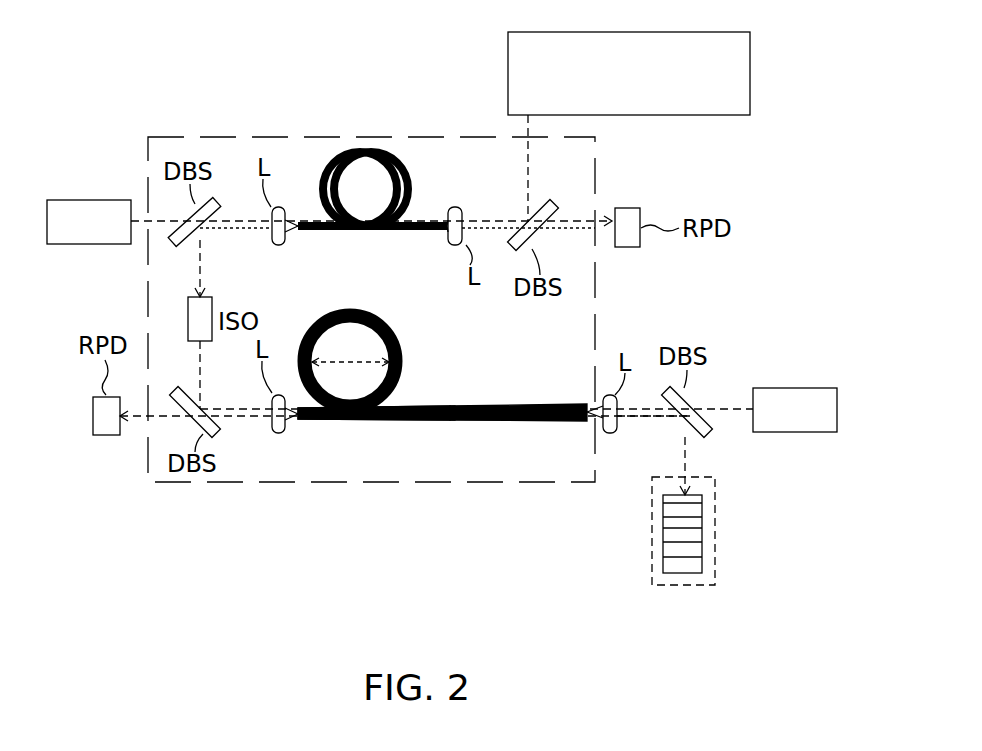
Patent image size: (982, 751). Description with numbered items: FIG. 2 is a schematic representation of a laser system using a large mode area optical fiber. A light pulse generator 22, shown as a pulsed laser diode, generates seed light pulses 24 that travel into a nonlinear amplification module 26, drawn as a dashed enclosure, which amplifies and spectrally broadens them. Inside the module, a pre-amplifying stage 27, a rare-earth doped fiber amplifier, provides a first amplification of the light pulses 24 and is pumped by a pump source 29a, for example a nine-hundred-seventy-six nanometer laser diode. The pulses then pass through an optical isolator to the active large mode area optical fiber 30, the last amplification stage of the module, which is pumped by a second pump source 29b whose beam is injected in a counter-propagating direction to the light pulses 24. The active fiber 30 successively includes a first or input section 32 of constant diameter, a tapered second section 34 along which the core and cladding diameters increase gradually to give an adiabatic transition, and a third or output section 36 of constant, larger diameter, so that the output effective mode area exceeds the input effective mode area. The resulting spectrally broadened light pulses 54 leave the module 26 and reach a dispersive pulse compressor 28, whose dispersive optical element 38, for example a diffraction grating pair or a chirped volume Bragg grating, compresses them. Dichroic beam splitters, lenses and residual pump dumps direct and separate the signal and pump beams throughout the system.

The light pulse generator 22 is at (508, 72).
The light pulses 24 is at (528, 160).
The nonlinear amplification module 26 is at (597, 149).
The pre-amplifying stage 27 is at (413, 188).
The dispersive pulse compressor 28 is at (652, 540).
The pump source 29a is at (87, 200).
The pump source 29b is at (801, 388).
The active Large Mode Area optical fiber 30 is at (414, 329).
The first or input section 32 is at (310, 420).
The tapered second section 34 is at (452, 406).
The third or output section 36 is at (540, 404).
The dispersive optical element 38 is at (690, 574).
The spectrally broadened light pulses 54 is at (640, 418).